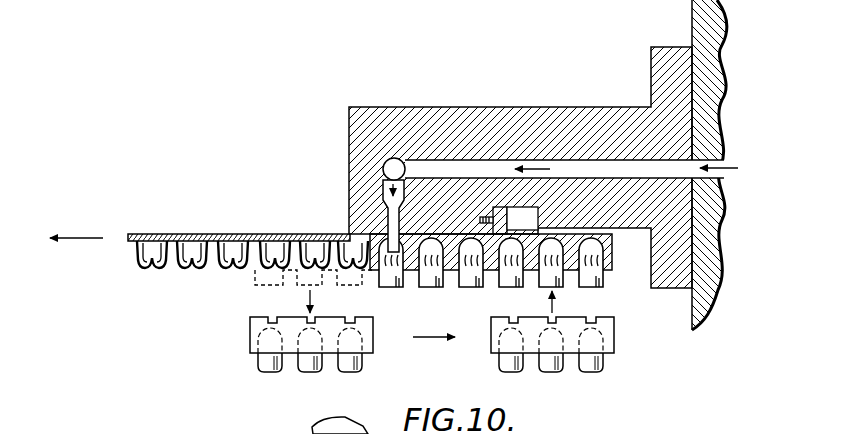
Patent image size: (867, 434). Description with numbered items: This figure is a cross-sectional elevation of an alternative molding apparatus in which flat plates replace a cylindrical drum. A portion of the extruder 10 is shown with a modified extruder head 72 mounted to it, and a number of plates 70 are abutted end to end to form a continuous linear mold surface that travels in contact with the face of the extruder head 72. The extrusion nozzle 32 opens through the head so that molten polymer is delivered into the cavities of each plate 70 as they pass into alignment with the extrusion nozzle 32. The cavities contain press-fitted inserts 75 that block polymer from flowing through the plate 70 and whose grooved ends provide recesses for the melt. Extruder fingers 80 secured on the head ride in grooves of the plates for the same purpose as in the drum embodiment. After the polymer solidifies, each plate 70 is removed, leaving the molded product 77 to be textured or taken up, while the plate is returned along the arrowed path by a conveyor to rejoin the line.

The extruder 10 is at (632, 75).
The extrusion nozzle 32 is at (388, 218).
The extruder head 72 is at (362, 224).
The molded product 77 is at (213, 234).
The plate 70 is at (612, 340).
The insert 75 is at (590, 364).
The extruder finger 80 is at (350, 432).